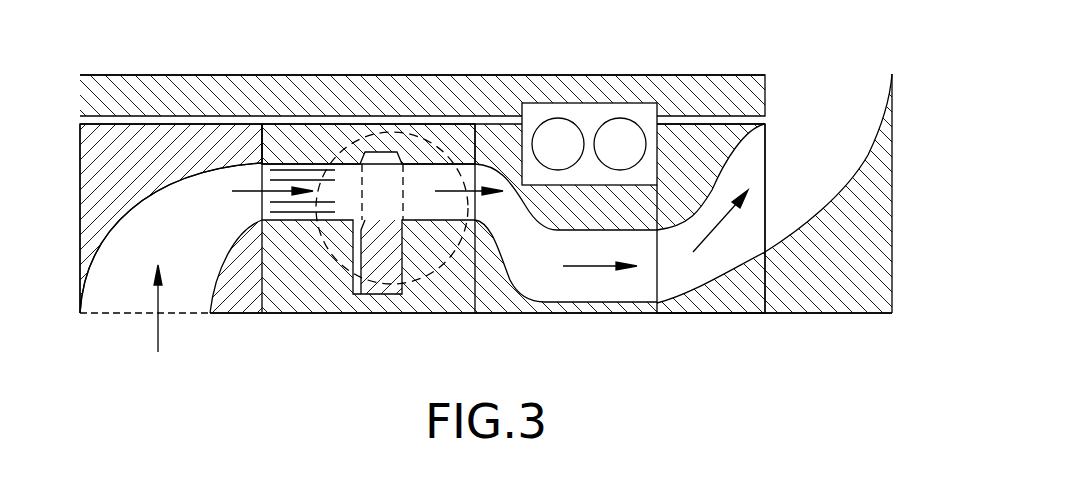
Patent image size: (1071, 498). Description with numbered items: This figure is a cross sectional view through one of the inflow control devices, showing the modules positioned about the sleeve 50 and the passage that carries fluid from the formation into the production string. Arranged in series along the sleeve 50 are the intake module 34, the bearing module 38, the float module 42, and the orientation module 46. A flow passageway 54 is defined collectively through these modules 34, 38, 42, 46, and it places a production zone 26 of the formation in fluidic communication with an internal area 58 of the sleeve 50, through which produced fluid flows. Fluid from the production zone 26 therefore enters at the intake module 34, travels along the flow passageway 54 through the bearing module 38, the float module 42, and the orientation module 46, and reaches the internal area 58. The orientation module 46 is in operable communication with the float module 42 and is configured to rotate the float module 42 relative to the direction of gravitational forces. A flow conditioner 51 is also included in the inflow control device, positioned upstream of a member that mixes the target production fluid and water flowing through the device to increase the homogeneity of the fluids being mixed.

The production zone 26 is at (452, 365).
The intake module 34 is at (155, 143).
The bearing module 38 is at (497, 138).
The float module 42 is at (300, 140).
The orientation module 46 is at (692, 140).
The sleeve 50 is at (197, 92).
The flow conditioner 51 is at (292, 207).
The flow passageway 54 is at (170, 256).
The internal area 58 is at (452, 39).